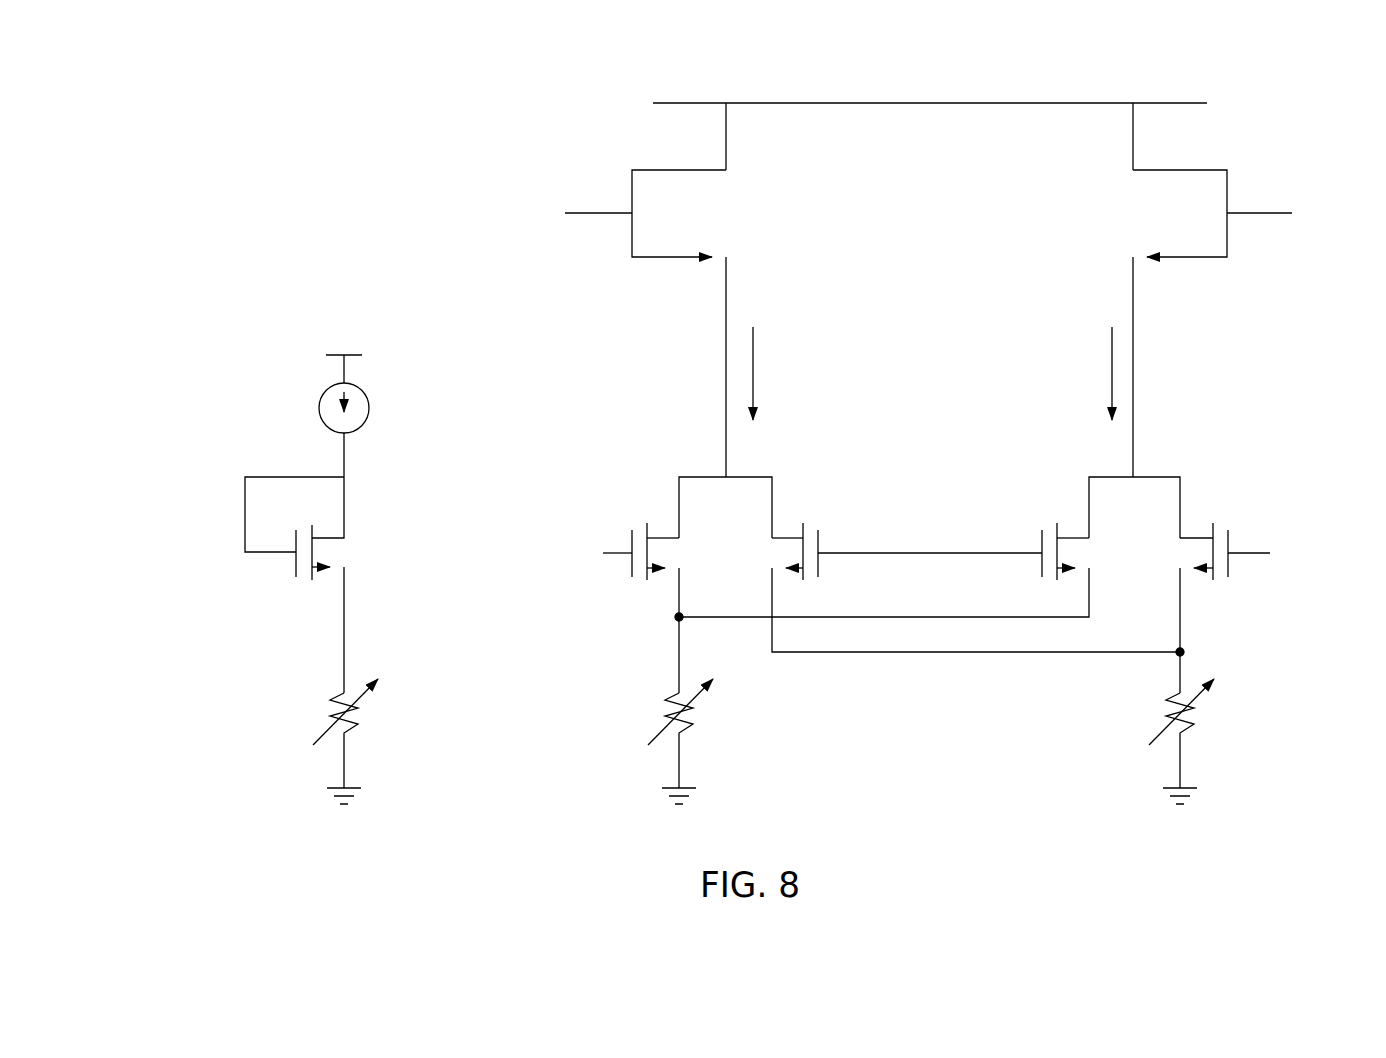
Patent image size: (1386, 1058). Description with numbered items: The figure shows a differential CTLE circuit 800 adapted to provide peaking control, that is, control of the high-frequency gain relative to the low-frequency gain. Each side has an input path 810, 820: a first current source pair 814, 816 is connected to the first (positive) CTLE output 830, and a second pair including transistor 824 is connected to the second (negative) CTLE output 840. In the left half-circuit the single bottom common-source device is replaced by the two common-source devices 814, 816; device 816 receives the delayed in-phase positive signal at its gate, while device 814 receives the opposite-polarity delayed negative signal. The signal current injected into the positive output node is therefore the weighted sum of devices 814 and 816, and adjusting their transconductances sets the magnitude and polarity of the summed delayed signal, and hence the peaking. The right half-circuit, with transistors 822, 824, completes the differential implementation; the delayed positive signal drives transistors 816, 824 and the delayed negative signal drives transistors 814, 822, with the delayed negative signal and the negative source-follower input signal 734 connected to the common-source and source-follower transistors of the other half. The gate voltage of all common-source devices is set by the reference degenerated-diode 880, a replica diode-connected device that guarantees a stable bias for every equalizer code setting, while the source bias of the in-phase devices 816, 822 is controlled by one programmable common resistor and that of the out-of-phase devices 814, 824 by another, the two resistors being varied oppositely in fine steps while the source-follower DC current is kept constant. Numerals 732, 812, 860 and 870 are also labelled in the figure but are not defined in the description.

The differential CTLE circuit 800 is at (378, 198).
The first source follower transistor 732 is at (565, 213).
The SFINN signal 734 is at (1255, 213).
The first differential pair 812 is at (568, 385).
The common-source device 814 is at (608, 502).
The common-source device 816 is at (803, 525).
The common-source transistor 822 is at (1288, 450).
The common-source transistor 824 is at (1020, 500).
The input path 810 is at (1020, 553).
The input path 820 is at (592, 560).
The first (positive) CTLE output 830 is at (726, 398).
The second (negative) CTLE output 840 is at (1133, 398).
The first common source node with variable resistor 860 is at (679, 617).
The second common source node with variable resistor 870 is at (1188, 650).
The reference degenerated-diode 880 is at (395, 435).